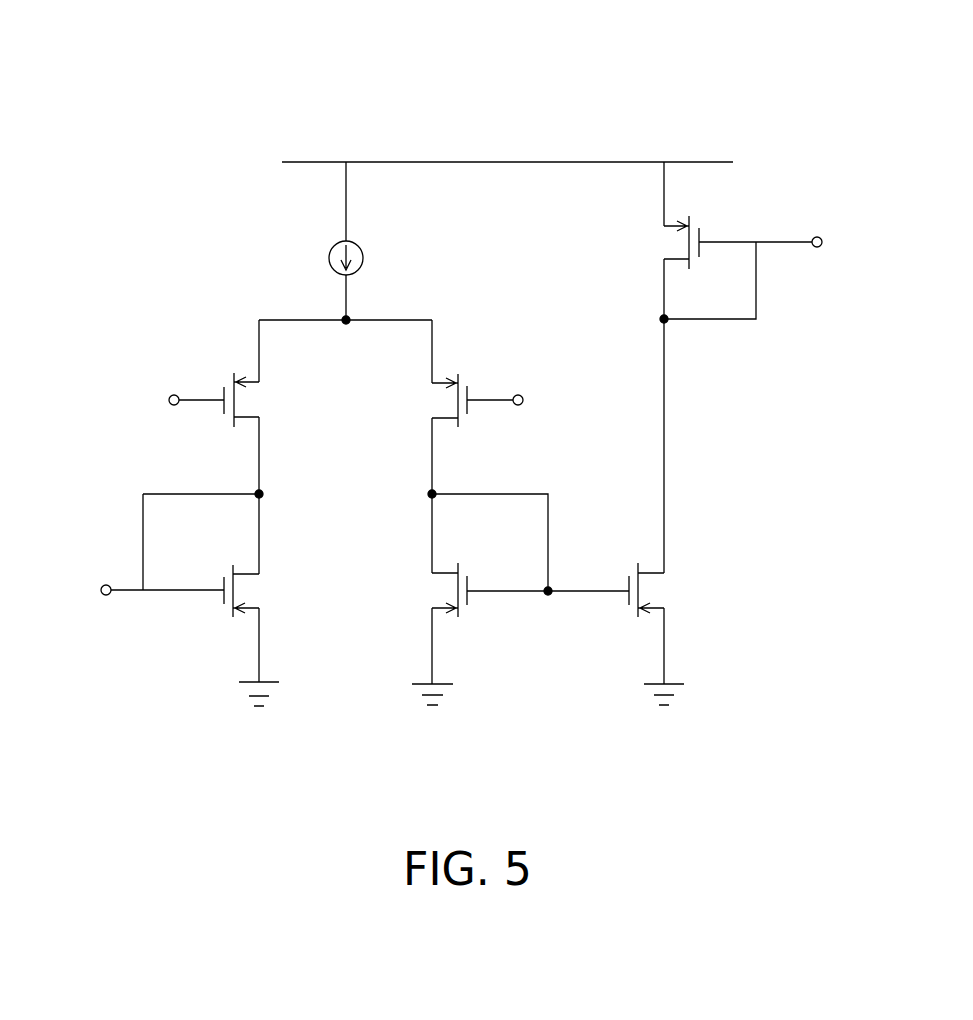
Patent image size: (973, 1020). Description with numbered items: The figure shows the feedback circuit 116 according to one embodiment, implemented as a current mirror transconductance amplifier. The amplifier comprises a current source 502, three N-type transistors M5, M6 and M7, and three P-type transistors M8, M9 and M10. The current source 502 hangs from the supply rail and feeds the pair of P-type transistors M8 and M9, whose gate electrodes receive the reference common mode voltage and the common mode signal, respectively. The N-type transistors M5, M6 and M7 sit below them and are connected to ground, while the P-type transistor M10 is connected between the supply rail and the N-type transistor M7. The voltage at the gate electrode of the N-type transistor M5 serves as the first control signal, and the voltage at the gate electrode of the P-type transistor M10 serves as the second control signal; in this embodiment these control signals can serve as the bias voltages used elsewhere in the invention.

The feedback circuit 116 is at (861, 96).
The current source 502 is at (363, 258).
The N-type transistor M5 is at (266, 588).
The N-type transistor M6 is at (424, 589).
The N-type transistor M7 is at (671, 501).
The P-type transistor M8 is at (266, 433).
The P-type transistor M9 is at (424, 434).
The P-type transistor M10 is at (648, 240).